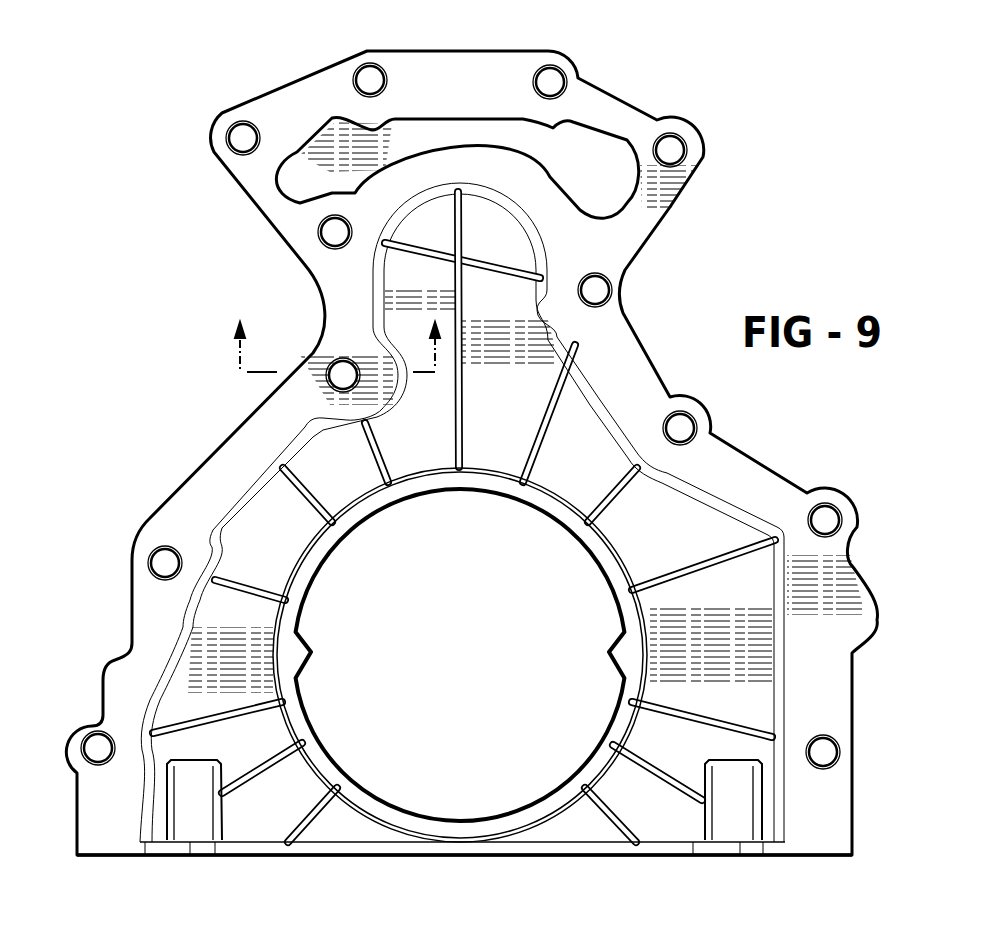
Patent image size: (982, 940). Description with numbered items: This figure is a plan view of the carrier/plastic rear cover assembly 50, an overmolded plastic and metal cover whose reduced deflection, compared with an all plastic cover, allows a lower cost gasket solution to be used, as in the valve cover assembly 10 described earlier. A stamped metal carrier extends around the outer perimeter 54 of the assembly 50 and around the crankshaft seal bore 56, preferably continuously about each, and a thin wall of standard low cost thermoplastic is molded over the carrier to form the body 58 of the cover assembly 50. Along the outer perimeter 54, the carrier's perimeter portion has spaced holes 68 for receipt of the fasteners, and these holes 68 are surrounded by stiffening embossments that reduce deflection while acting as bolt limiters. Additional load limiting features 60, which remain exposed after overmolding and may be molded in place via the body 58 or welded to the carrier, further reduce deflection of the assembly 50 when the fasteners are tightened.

The cover assembly 50 is at (156, 296).
The outer perimeter 54 is at (220, 442).
The crankshaft seal bore 56 is at (590, 558).
The body 58 is at (498, 238).
The load limiting features 60 is at (472, 397).
The holes 68 is at (449, 388).
The valve cover assembly 10 is at (323, 368).